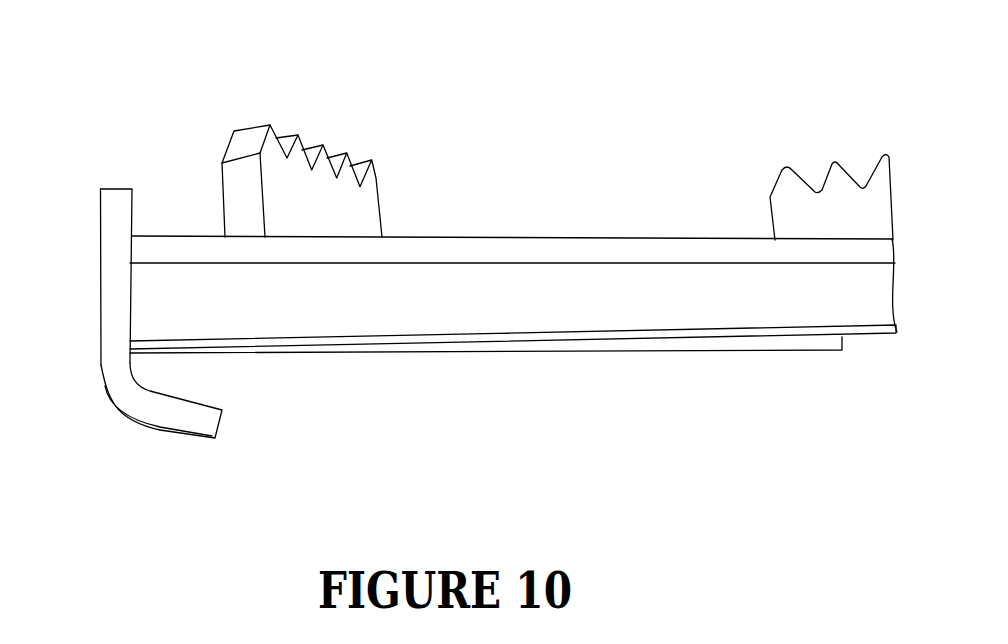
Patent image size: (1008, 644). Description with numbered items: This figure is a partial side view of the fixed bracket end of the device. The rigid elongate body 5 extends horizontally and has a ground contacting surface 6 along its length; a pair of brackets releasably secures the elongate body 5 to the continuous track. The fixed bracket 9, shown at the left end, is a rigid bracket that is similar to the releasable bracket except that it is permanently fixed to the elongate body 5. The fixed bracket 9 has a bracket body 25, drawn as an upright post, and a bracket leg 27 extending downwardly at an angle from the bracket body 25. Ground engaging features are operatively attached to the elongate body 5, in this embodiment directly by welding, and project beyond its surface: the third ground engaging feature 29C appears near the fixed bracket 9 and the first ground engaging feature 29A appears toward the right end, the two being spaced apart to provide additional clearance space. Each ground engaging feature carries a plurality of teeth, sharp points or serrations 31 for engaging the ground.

The elongate body 5 is at (480, 277).
The ground contacting surface 6 is at (600, 238).
The fixed bracket 9 is at (112, 400).
The bracket body 25 is at (100, 223).
The bracket leg 27 is at (210, 420).
The first ground engaging feature 29A is at (823, 167).
The third ground engaging feature 29C is at (251, 124).
The teeth, sharp points or serrations 31 is at (262, 124).